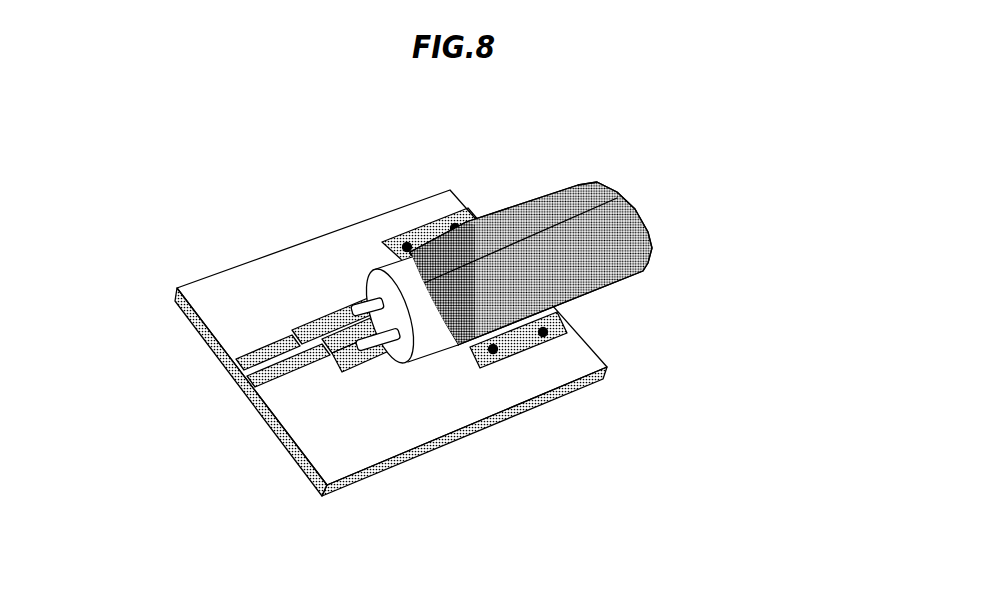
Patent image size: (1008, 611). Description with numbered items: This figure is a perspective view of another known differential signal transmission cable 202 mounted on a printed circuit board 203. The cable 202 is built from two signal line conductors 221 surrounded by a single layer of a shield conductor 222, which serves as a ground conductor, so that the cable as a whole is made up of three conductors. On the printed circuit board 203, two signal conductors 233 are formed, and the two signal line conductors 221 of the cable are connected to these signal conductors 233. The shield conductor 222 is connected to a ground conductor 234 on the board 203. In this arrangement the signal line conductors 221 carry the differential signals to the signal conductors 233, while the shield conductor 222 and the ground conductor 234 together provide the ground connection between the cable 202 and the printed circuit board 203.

The differential signal transmission cable 202 is at (500, 222).
The signal line conductor 221 is at (352, 309).
The shield conductor 222 is at (296, 250).
The signal conductor 233 is at (340, 373).
The ground conductor 234 is at (527, 347).
The printed circuit board 203 is at (362, 499).